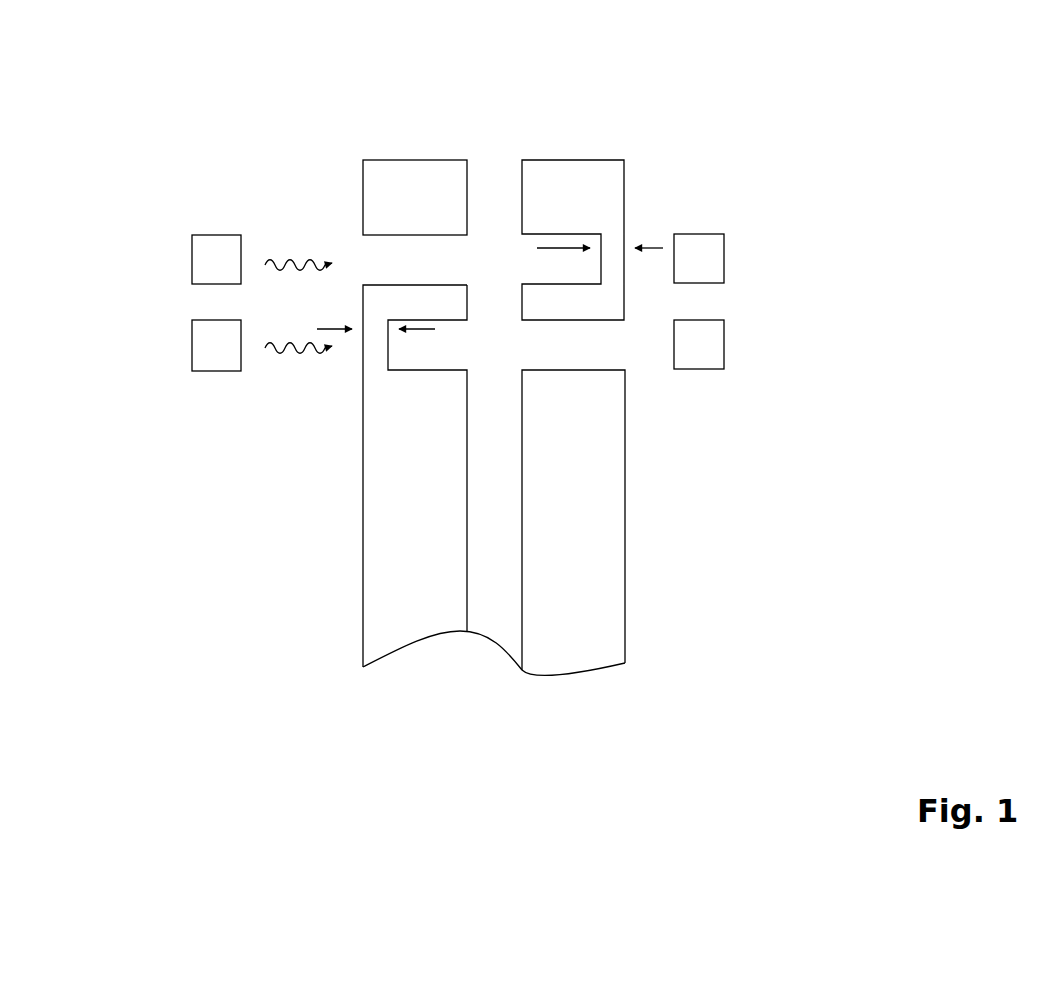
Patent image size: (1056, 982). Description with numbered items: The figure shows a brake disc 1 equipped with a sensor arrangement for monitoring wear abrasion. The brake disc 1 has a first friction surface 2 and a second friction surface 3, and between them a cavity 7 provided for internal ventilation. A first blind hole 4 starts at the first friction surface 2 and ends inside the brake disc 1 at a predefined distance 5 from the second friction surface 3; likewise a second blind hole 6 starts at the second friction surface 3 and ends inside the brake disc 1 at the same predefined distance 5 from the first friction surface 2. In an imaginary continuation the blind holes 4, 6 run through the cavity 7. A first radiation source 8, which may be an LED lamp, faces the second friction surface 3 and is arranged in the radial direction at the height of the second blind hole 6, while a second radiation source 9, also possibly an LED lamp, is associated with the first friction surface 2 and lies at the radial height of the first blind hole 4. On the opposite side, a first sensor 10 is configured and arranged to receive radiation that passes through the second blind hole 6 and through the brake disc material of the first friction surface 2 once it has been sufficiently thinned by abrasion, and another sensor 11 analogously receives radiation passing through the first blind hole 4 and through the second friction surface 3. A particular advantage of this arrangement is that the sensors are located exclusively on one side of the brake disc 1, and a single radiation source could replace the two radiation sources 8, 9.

The brake disc 1 is at (578, 105).
The first friction surface 2 is at (624, 182).
The second friction surface 3 is at (363, 194).
The first blind hole 4 is at (601, 342).
The predefined distance 5 is at (610, 247).
The second blind hole 6 is at (382, 247).
The cavity 7 is at (492, 140).
The first radiation source 8 is at (198, 257).
The second radiation source 9 is at (210, 343).
The first sensor 10 is at (712, 260).
The sensor 11 is at (707, 347).